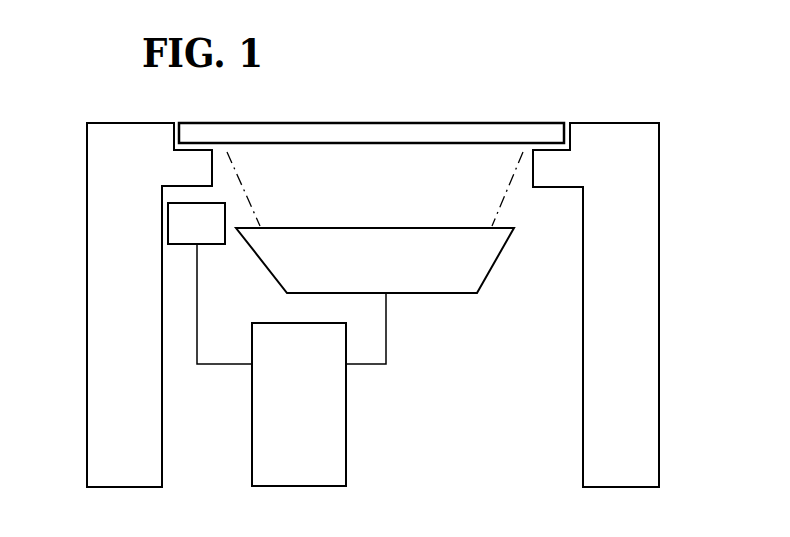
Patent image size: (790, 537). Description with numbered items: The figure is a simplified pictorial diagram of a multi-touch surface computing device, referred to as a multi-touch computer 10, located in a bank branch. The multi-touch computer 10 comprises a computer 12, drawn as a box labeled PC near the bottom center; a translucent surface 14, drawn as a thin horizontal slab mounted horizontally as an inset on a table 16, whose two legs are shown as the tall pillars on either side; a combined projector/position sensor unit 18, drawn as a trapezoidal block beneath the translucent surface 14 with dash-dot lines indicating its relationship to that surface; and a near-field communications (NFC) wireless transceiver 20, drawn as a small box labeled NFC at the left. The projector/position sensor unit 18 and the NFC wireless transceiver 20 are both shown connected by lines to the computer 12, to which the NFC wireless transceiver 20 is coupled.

The multi-touch computer 10 is at (696, 55).
The computer 12 is at (320, 486).
The translucent surface 14 is at (447, 123).
The table 16 is at (88, 401).
The combined projector/position sensor unit 18 is at (452, 293).
The near-field communications (NFC) wireless transceiver 20 is at (168, 220).